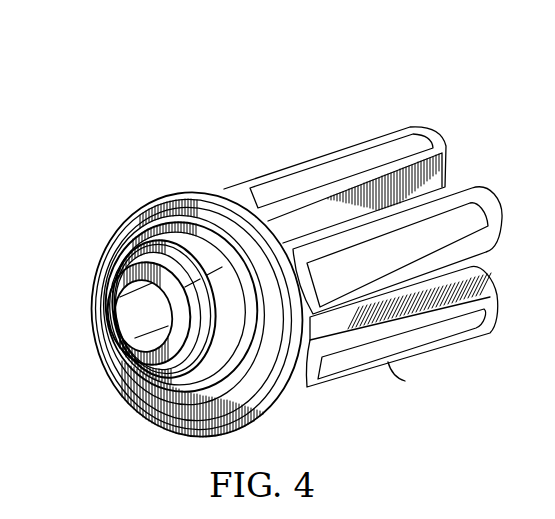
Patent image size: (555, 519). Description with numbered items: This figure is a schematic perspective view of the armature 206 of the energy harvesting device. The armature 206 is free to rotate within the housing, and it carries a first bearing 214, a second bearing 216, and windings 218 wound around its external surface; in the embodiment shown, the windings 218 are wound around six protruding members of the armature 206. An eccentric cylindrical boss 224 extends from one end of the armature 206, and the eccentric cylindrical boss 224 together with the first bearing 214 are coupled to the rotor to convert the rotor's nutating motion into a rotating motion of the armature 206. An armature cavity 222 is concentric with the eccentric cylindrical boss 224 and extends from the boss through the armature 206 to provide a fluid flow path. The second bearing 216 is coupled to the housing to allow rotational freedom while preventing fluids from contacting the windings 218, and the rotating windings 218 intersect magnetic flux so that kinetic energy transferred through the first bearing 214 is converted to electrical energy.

The armature 206 is at (152, 73).
The first bearing 214 is at (128, 243).
The second bearing 216 is at (122, 218).
The windings 218 is at (312, 155).
The armature cavity 222 is at (128, 319).
The eccentric cylindrical boss 224 is at (114, 289).